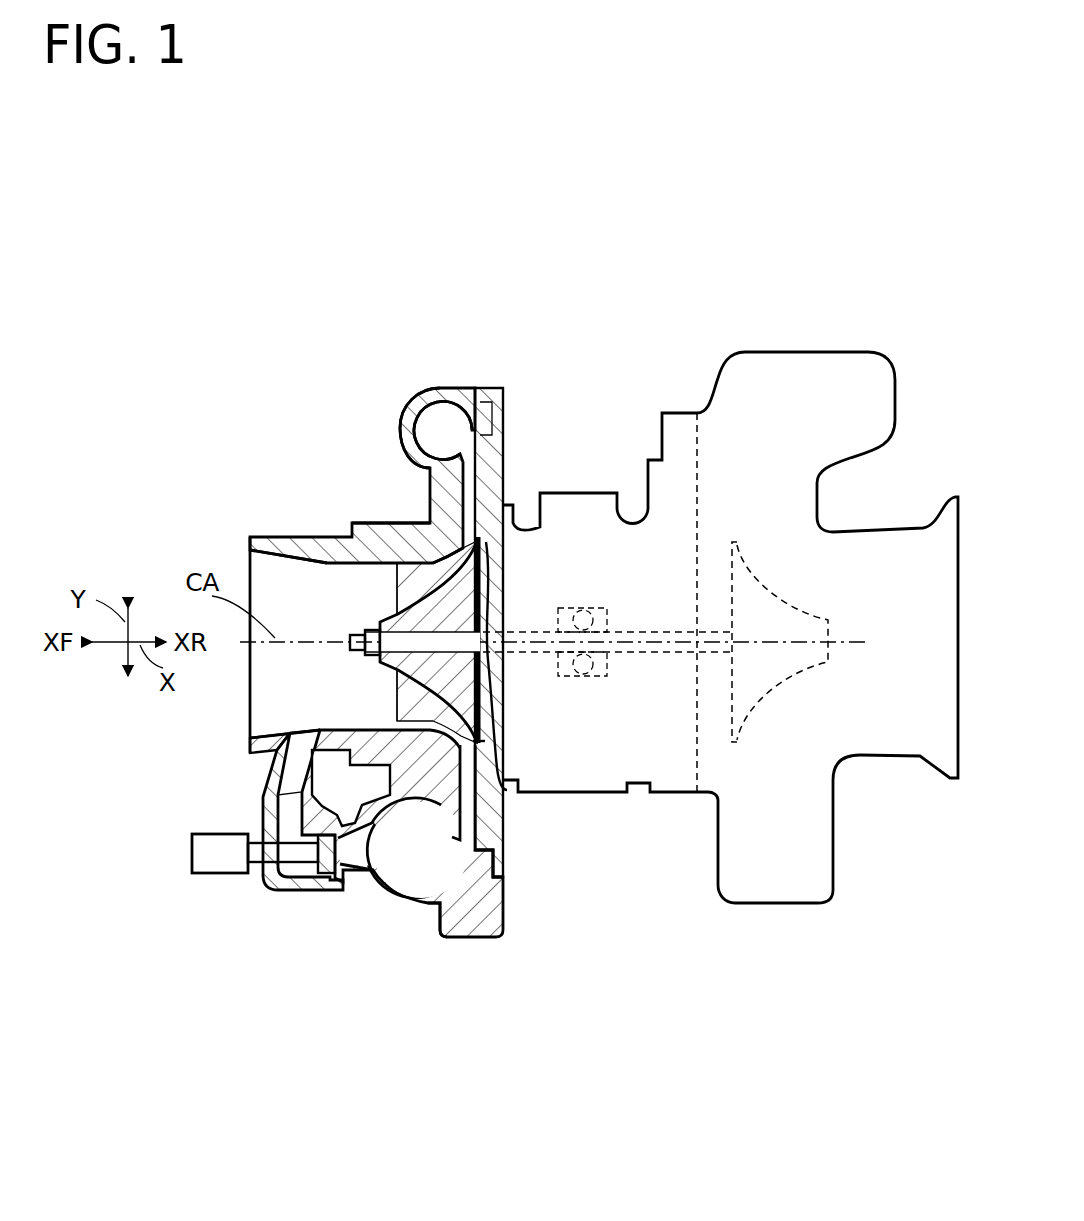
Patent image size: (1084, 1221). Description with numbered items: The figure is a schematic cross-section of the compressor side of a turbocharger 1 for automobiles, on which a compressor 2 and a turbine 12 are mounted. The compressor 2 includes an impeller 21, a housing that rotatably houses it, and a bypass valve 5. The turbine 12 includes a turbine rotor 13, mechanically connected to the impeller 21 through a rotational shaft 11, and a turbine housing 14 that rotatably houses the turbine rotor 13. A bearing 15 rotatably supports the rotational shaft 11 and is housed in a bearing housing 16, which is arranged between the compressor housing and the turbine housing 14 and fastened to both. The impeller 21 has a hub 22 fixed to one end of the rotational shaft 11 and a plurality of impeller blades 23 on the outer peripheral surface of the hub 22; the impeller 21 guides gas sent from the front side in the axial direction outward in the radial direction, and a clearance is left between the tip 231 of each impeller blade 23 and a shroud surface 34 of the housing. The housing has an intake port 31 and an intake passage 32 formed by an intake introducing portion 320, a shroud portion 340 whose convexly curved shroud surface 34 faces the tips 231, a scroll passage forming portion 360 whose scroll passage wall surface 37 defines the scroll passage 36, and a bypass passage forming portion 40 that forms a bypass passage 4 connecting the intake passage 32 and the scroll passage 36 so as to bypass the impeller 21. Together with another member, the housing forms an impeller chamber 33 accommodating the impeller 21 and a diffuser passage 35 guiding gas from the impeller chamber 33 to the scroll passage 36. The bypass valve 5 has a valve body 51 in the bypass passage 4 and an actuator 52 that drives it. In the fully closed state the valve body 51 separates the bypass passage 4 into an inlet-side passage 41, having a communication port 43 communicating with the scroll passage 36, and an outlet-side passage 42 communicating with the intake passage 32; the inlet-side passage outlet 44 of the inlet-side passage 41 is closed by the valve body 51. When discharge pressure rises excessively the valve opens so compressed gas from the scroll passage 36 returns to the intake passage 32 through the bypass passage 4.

The turbocharger 1 is at (277, 178).
The compressor 2 is at (393, 525).
The bypass passage 4 is at (331, 872).
The bypass valve 5 is at (250, 915).
The rotational shaft 11 is at (537, 632).
The turbine 12 is at (827, 585).
The turbine rotor 13 is at (785, 600).
The turbine housing 14 is at (782, 352).
The bearing 15 is at (583, 607).
The bearing housing 16 is at (504, 450).
The impeller 21 is at (412, 555).
The hub 22 is at (400, 611).
The impeller blades 23 is at (423, 600).
The intake port 31 is at (250, 552).
The intake passage 32 is at (294, 703).
The impeller chamber 33 is at (411, 718).
The shroud surface 34 is at (345, 527).
The diffuser passage 35 is at (488, 795).
The scroll passage 36 is at (431, 444).
The scroll passage wall surface 37 is at (490, 878).
The bypass passage forming portion 40 is at (264, 800).
The inlet-side passage 41 is at (365, 895).
The outlet-side passage 42 is at (295, 772).
The communication port 43 is at (374, 835).
The inlet-side passage outlet 44 is at (330, 875).
The valve body 51 is at (317, 867).
The actuator 52 is at (215, 876).
The tip 231 is at (450, 540).
The intake introducing portion 320 is at (307, 545).
The shroud portion 340 is at (446, 538).
The scroll passage forming portion 360 is at (440, 905).